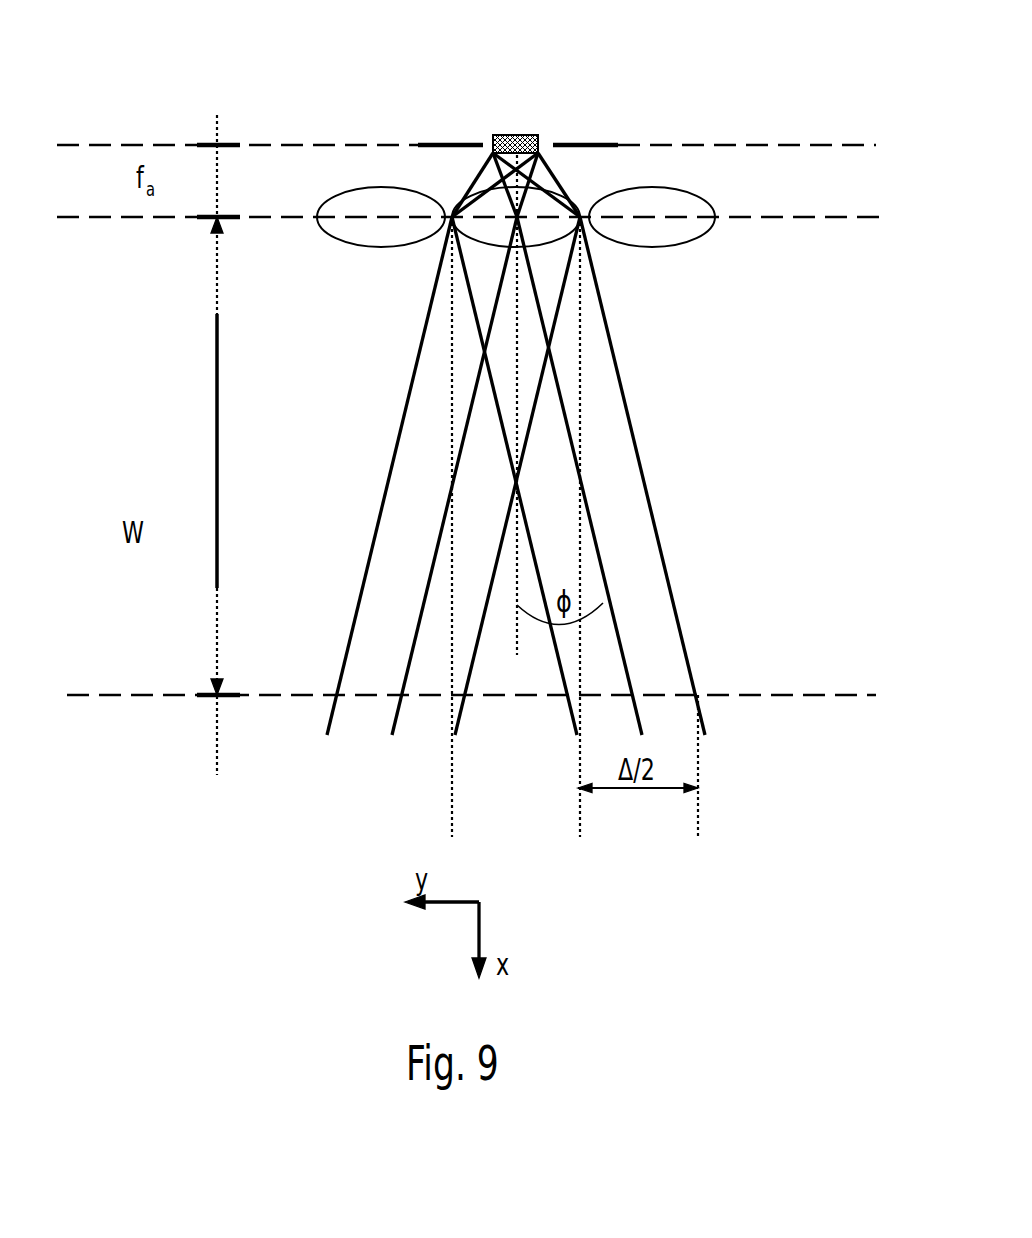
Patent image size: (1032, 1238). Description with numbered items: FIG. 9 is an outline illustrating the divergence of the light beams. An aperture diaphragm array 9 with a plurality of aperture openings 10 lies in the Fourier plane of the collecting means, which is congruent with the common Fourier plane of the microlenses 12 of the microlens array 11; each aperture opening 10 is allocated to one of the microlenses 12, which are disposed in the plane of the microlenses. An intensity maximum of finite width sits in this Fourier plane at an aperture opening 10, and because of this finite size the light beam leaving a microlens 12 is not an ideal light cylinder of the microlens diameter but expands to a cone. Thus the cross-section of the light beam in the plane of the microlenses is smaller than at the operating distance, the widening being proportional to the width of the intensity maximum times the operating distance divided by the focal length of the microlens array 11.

The aperture diaphragm array 9 is at (604, 143).
The aperture opening 10 is at (522, 107).
The microlens array 11 is at (591, 274).
The microlens 12 is at (360, 248).